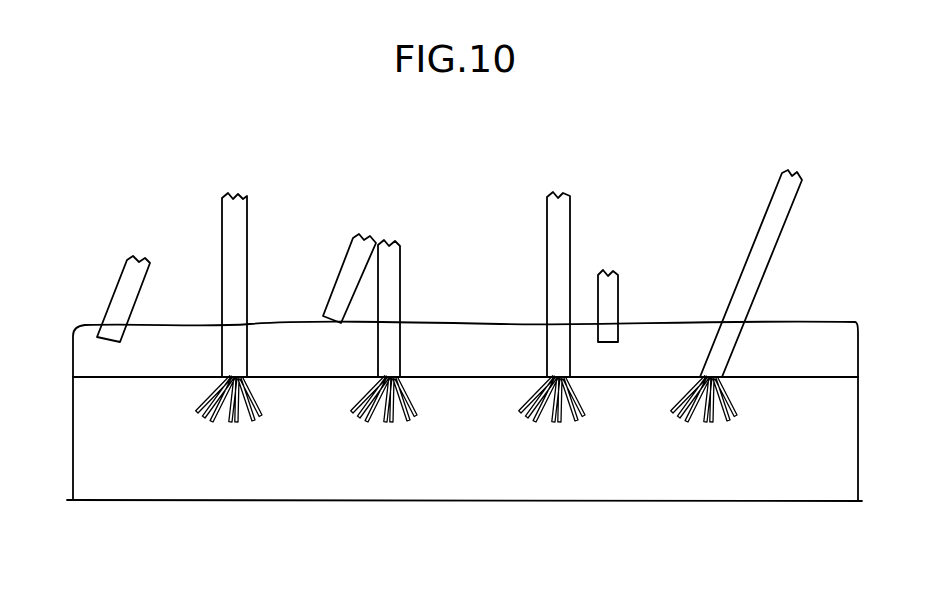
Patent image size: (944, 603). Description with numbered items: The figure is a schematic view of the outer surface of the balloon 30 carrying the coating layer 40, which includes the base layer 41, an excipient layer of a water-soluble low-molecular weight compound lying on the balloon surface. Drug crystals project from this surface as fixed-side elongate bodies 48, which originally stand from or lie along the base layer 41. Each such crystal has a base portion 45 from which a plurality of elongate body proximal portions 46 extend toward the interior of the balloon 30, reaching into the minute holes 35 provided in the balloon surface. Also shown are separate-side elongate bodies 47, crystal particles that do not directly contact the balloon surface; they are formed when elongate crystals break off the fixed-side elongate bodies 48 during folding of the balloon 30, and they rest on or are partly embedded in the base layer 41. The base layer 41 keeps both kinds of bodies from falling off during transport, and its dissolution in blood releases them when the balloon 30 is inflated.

The balloon 30 is at (473, 477).
The minute holes 35 is at (205, 410).
The coating layer 40 is at (93, 323).
The base layer 41 is at (832, 347).
The base portion 45 is at (258, 423).
The elongate body proximal portions 46 is at (242, 420).
The separate-side elongate bodies 47 is at (118, 296).
The fixed-side elongate bodies 48 is at (235, 230).